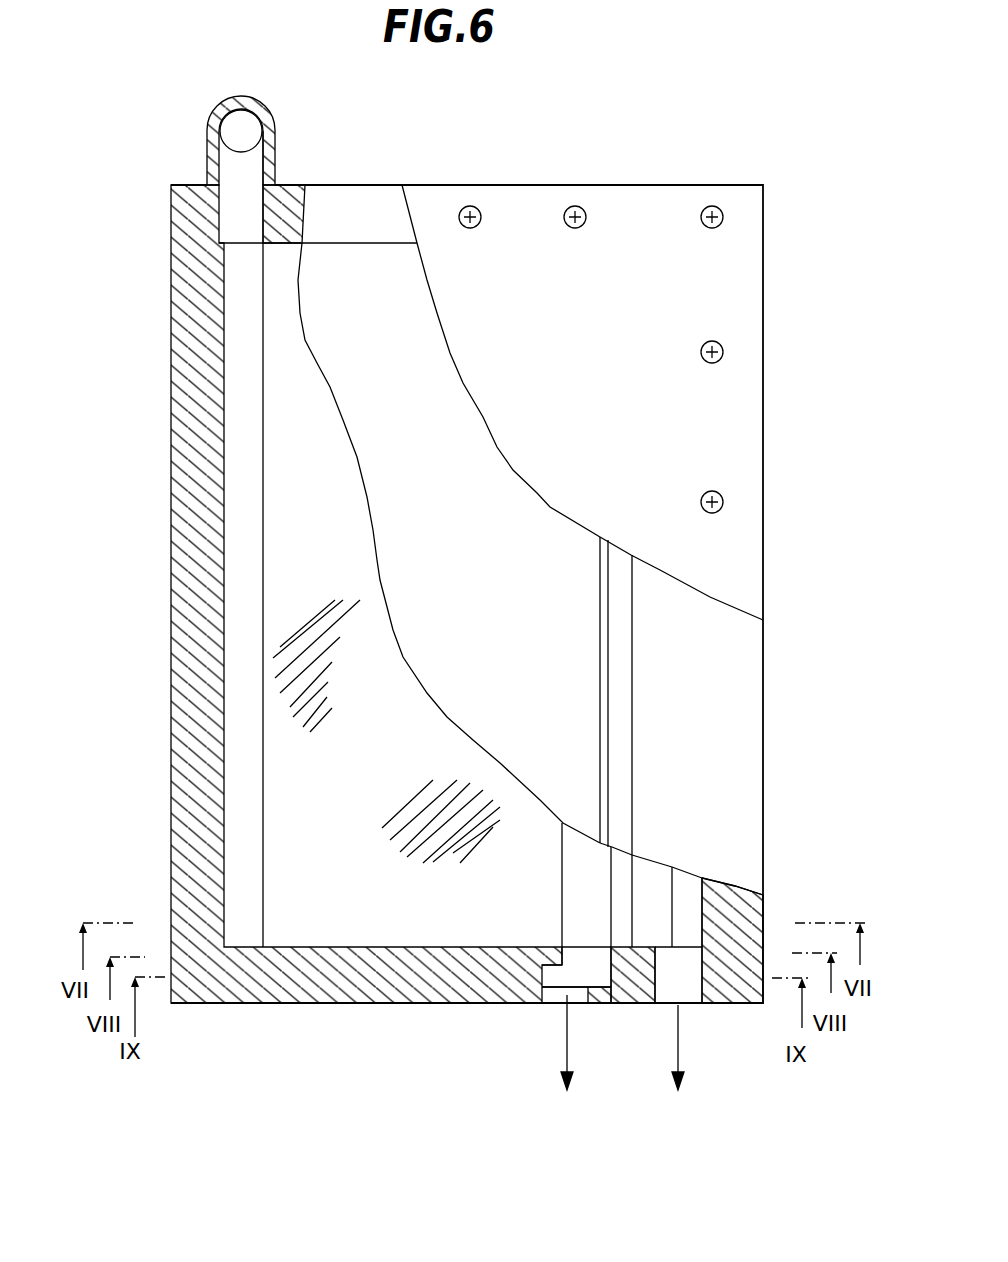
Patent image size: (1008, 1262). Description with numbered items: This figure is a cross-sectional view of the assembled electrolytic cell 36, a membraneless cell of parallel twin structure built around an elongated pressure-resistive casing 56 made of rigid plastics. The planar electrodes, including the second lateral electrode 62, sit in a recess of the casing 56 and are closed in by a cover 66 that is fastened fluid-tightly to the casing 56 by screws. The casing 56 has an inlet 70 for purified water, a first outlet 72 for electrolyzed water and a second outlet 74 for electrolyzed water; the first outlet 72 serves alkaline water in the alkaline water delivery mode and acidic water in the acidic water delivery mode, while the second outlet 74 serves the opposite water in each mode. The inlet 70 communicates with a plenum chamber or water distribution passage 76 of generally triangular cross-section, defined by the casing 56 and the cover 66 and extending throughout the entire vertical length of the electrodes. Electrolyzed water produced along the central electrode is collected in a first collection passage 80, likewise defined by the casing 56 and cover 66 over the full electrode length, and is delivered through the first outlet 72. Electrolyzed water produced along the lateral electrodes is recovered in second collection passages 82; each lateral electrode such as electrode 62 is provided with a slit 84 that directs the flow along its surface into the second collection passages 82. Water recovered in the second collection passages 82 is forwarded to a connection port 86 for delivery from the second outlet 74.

The electrolytic cell 36 is at (804, 296).
The casing 56 is at (183, 572).
The second lateral electrode 62 is at (351, 252).
The cover 66 is at (622, 210).
The inlet 70 is at (240, 167).
The first outlet 72 is at (668, 978).
The second outlet 74 is at (553, 995).
The plenum chamber 76 is at (245, 303).
The first collection passage 80 is at (678, 882).
The second collection passage 82 is at (568, 923).
The slit 84 is at (603, 693).
The connection port 86 is at (573, 966).